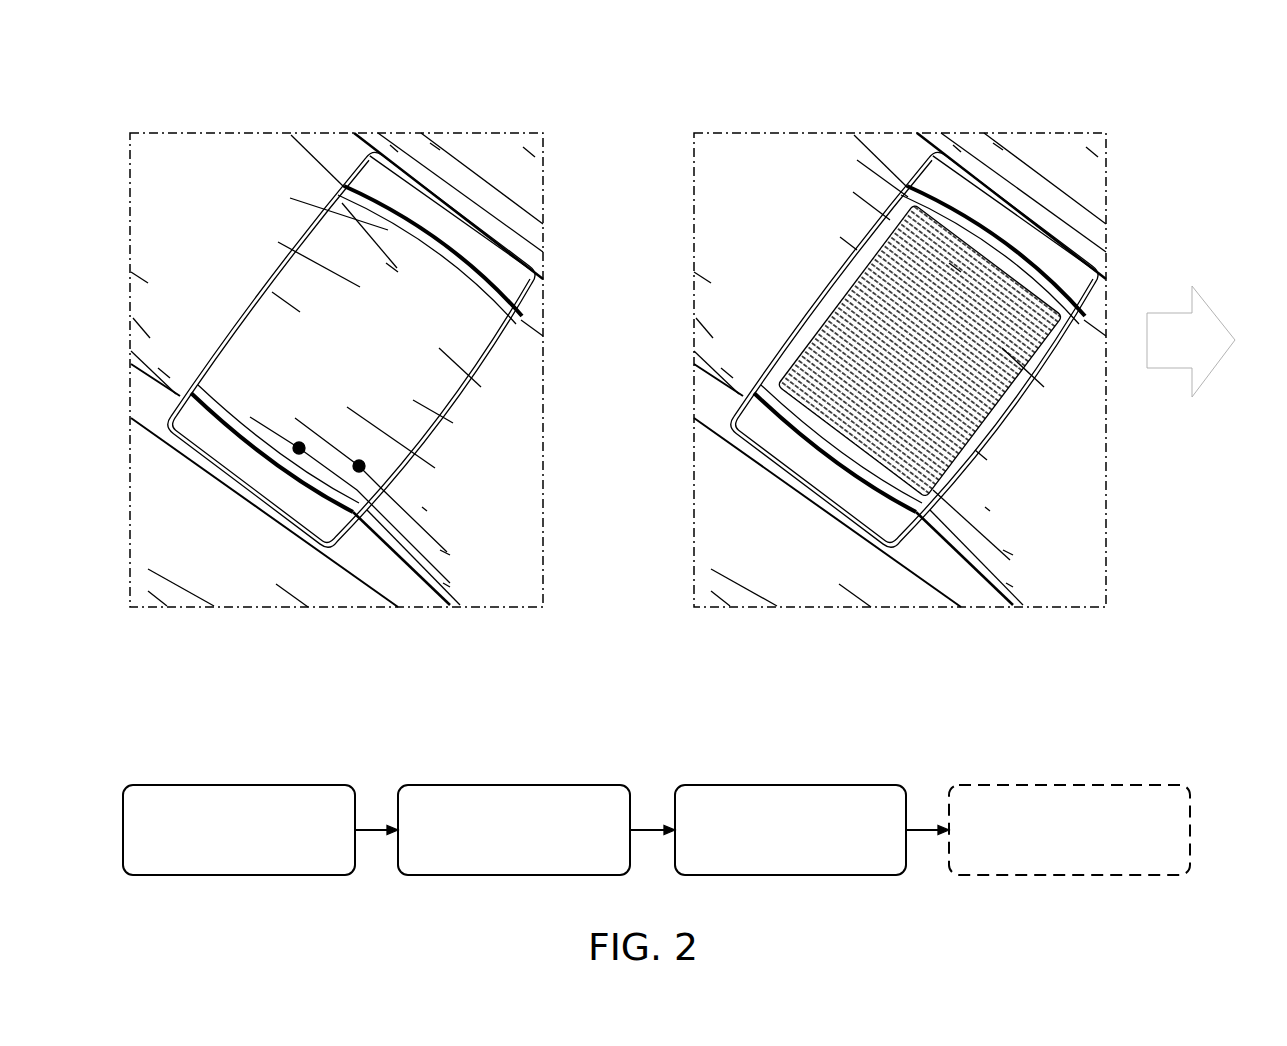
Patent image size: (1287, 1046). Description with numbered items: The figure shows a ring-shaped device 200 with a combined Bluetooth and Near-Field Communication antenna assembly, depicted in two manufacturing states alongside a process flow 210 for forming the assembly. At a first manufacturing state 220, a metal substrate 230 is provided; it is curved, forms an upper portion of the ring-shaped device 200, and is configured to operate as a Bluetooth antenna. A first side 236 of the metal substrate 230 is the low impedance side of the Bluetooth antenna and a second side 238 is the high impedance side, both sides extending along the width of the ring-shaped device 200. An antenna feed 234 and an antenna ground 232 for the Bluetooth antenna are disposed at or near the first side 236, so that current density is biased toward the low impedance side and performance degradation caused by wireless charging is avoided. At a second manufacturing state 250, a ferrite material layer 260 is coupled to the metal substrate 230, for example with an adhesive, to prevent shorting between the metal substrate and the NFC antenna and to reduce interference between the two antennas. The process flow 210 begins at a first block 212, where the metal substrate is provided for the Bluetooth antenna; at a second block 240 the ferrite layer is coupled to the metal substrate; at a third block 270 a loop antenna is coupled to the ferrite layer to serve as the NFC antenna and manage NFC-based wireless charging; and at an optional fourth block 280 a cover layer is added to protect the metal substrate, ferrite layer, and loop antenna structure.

The ring-shaped device 200 is at (1203, 84).
The process flow 210 is at (685, 766).
The first block 212 is at (242, 784).
The first manufacturing state 220 is at (338, 344).
The metal substrate 230 is at (278, 325).
The antenna ground 232 is at (298, 444).
The antenna feed 234 is at (360, 462).
The first side 236 is at (398, 524).
The second side 238 is at (318, 198).
The second block 240 is at (518, 784).
The second manufacturing state 250 is at (902, 344).
The ferrite material layer 260 is at (875, 312).
The step of coupling loop antenna to ferrite layer for NFC antenna 270 is at (793, 784).
The fourth block 280 is at (1068, 784).